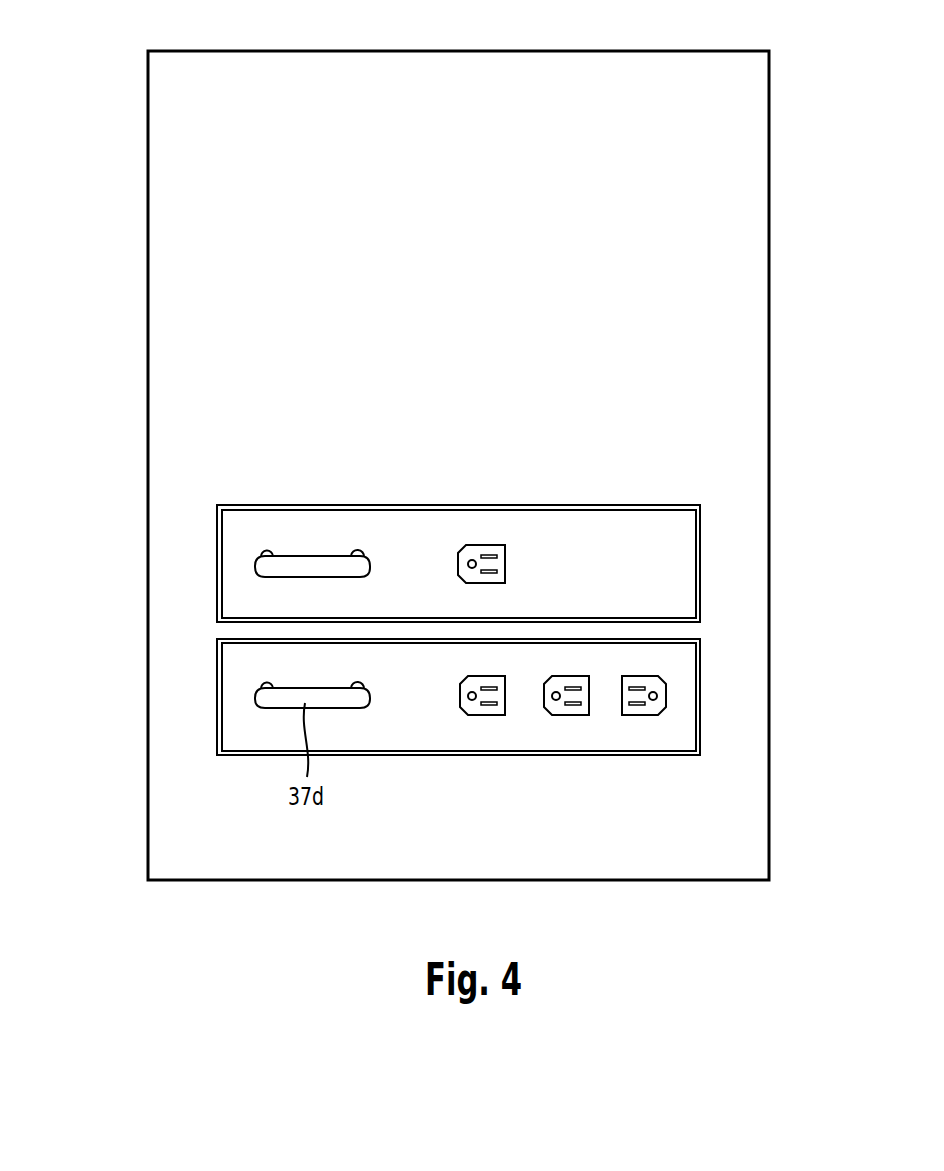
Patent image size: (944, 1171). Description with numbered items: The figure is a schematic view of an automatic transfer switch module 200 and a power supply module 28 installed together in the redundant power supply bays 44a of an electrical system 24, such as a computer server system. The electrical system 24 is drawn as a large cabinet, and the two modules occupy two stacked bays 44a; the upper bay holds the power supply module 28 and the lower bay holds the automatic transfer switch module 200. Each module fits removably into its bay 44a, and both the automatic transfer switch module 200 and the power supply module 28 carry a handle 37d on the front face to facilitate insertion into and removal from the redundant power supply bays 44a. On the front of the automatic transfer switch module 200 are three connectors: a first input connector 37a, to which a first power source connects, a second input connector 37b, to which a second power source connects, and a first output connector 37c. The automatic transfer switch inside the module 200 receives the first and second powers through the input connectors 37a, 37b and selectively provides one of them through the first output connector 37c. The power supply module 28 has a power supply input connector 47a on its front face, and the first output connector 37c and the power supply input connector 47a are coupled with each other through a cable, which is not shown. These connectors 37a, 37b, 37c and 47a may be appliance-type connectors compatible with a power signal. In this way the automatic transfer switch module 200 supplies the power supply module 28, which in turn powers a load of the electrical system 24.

The electrical system 24 is at (193, 51).
The power supply module 28 is at (637, 540).
The automatic transfer switch module 200 is at (683, 664).
The redundant power supply bay 44a is at (217, 637).
The handle 37d is at (311, 565).
The power supply input connector 47a is at (493, 540).
The first input connector 37a is at (472, 712).
The second input connector 37b is at (556, 712).
The first output connector 37c is at (653, 712).